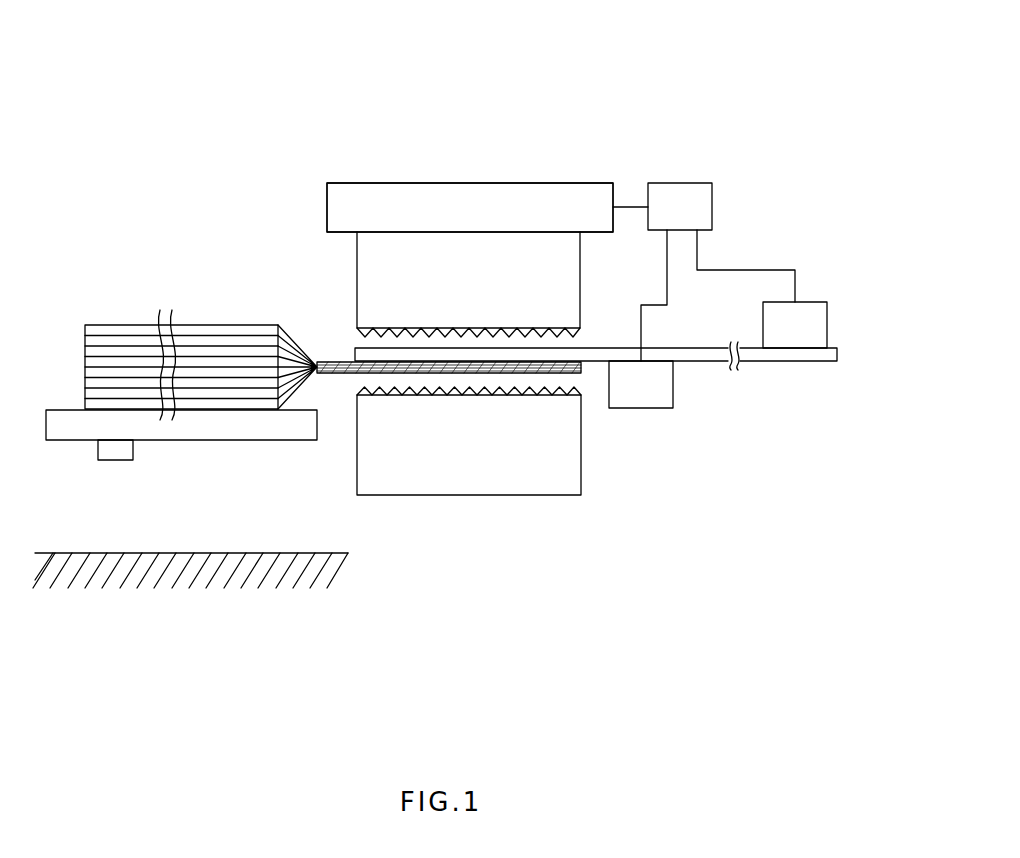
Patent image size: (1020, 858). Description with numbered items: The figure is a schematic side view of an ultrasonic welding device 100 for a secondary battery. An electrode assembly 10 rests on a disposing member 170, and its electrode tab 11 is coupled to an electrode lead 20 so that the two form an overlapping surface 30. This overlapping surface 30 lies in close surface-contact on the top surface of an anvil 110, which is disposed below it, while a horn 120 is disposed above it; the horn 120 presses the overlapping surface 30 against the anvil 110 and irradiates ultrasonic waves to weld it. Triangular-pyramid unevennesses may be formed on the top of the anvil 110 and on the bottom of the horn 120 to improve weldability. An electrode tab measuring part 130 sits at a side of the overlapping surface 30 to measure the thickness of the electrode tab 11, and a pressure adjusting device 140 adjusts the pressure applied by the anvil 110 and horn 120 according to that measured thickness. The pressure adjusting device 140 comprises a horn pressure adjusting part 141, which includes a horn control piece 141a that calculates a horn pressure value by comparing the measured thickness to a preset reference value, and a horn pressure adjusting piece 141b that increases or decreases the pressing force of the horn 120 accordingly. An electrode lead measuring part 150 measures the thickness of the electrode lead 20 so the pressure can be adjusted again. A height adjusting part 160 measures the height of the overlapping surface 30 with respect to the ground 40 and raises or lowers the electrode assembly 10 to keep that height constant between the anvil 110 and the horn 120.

The ultrasonic welding device 100 is at (342, 62).
The electrode assembly 10 is at (222, 323).
The electrode tab 11 is at (345, 377).
The electrode lead 20 is at (602, 347).
The overlapping surface 30 is at (472, 363).
The ground 40 is at (337, 567).
The anvil 110 is at (572, 445).
The horn 120 is at (357, 280).
The electrode tab measuring part 130 is at (670, 383).
The pressure adjusting device 140 is at (573, 73).
The horn pressure adjusting part 141 is at (573, 120).
The horn control piece 141a is at (673, 193).
The horn pressure adjusting piece 141b is at (575, 195).
The electrode lead measuring part 150 is at (815, 307).
The height adjusting part 160 is at (133, 448).
The disposing member 170 is at (259, 433).